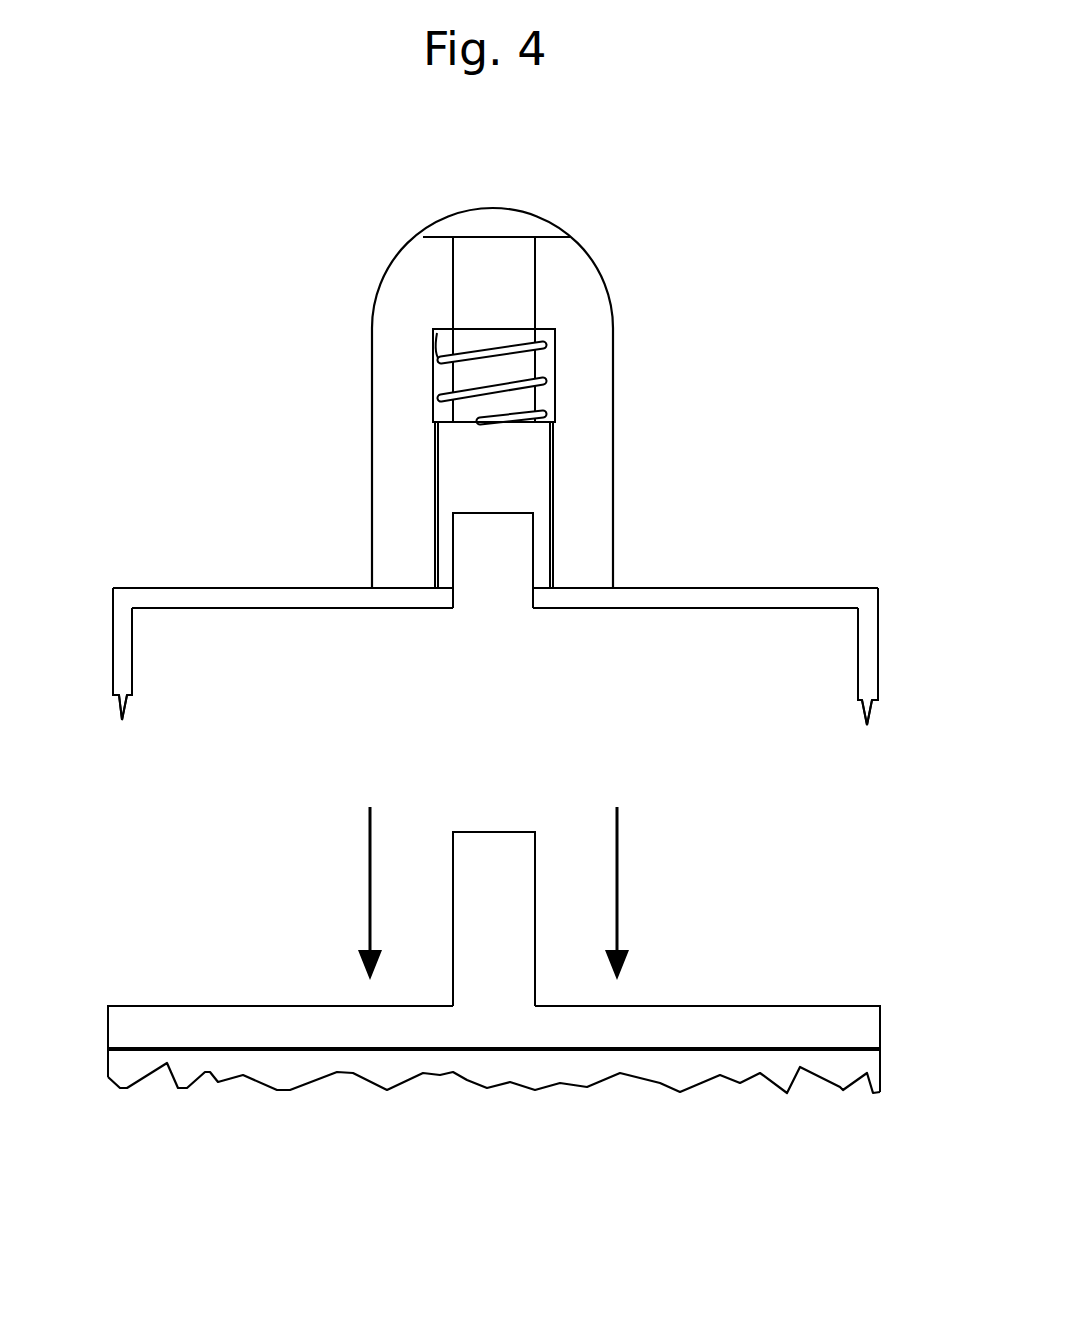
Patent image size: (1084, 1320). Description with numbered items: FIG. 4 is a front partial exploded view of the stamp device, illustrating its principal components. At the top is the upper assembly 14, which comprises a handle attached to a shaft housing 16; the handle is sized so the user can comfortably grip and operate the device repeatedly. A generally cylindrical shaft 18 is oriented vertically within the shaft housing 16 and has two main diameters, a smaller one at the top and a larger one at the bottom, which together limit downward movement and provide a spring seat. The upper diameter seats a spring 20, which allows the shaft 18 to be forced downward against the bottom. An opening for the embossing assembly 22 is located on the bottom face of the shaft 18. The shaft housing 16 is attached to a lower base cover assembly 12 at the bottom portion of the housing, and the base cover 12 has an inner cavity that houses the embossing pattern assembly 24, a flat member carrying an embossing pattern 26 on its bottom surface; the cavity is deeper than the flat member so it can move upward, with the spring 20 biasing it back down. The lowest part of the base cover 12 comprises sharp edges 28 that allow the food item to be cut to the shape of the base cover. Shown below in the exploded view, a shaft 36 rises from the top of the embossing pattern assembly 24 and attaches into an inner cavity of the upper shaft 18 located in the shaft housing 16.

The lower base cover assembly 12 is at (770, 585).
The upper assembly 14 is at (597, 265).
The shaft housing 16 is at (500, 487).
The shaft 18 is at (472, 278).
The spring 20 is at (437, 333).
The opening for the embossing assembly 22 is at (447, 560).
The embossing pattern assembly 24 is at (747, 1030).
The embossing pattern 26 is at (568, 1062).
The sharp edges 28 is at (120, 720).
The shaft 36 is at (498, 927).